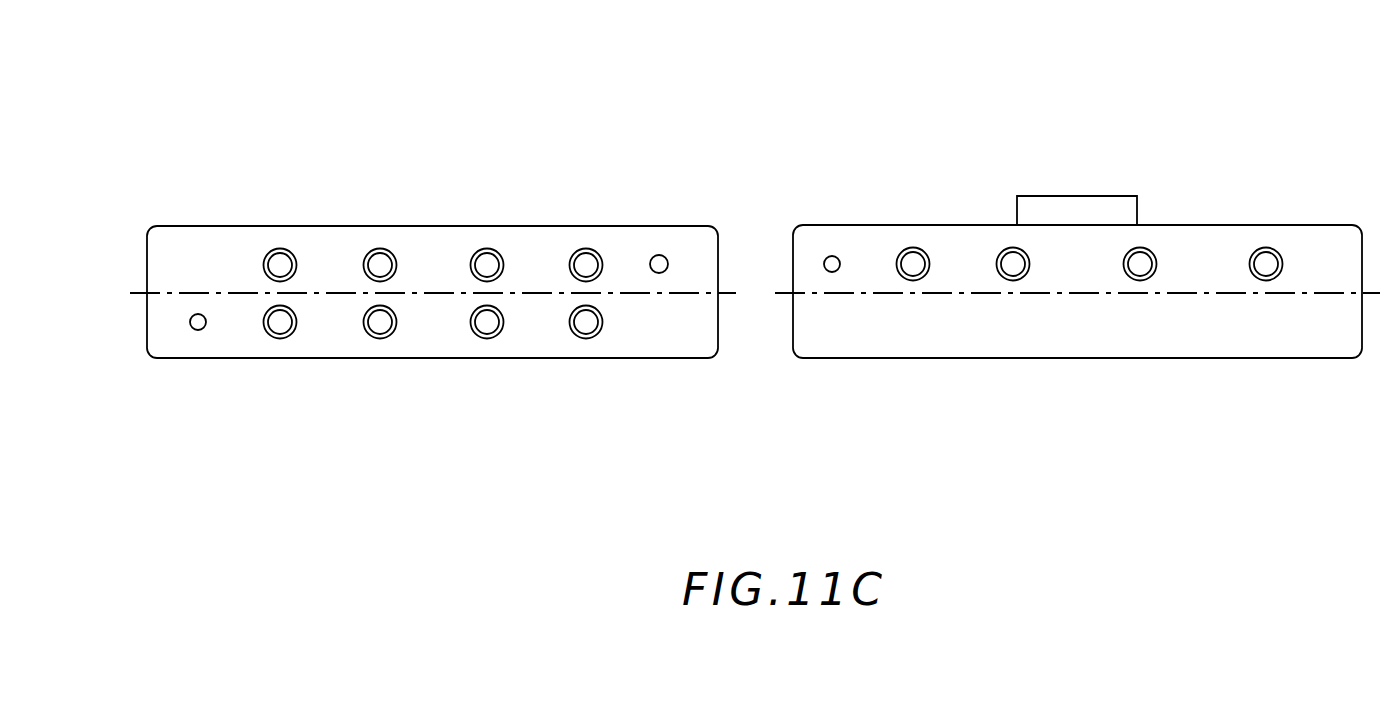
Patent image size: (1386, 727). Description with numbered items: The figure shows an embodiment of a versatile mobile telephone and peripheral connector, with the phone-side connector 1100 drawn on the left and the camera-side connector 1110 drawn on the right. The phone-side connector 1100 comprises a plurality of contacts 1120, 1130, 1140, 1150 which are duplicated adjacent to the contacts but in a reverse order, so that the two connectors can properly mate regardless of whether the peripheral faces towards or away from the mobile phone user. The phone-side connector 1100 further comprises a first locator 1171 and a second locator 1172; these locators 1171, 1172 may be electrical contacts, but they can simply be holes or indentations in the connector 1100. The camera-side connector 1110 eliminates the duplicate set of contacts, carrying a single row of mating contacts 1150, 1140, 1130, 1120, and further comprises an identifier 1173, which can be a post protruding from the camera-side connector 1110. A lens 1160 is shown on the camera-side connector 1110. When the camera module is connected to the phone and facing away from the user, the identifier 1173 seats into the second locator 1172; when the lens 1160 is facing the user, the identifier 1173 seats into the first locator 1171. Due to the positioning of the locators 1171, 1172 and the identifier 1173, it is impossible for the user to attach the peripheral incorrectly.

The phone-side connector 1100 is at (190, 265).
The camera-side connector 1110 is at (1320, 337).
The contact 1120 is at (281, 265).
The contact 1130 is at (382, 265).
The contact 1140 is at (486, 265).
The contact 1150 is at (586, 265).
The lens 1160 is at (1063, 212).
The first locator 1171 is at (193, 328).
The second locator 1172 is at (661, 273).
The identifier 1173 is at (826, 259).